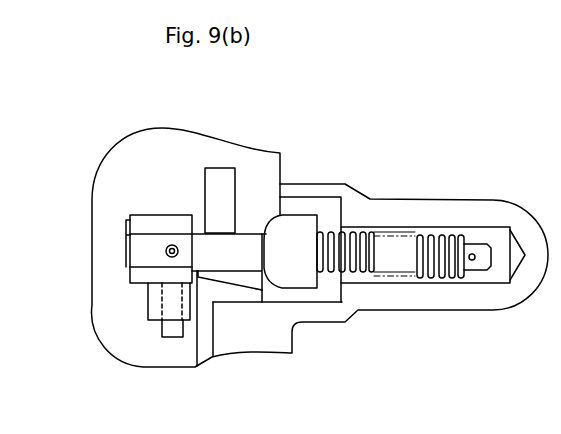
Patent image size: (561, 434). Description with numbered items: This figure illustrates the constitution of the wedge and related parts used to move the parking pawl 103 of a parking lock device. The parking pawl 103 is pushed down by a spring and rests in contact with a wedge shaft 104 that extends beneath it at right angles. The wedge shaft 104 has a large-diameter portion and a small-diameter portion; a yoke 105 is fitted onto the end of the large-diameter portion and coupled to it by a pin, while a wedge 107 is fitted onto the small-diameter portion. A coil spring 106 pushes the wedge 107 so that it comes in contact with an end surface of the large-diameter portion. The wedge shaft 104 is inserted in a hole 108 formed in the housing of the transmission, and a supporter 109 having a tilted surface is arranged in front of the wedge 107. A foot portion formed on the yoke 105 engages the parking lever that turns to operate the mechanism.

The parking pawl 103 is at (218, 168).
The wedge shaft 104 is at (397, 272).
The yoke 105 is at (130, 224).
The coil spring 106 is at (438, 280).
The wedge 107 is at (297, 282).
The hole 108 is at (481, 232).
The supporter 109 is at (228, 293).